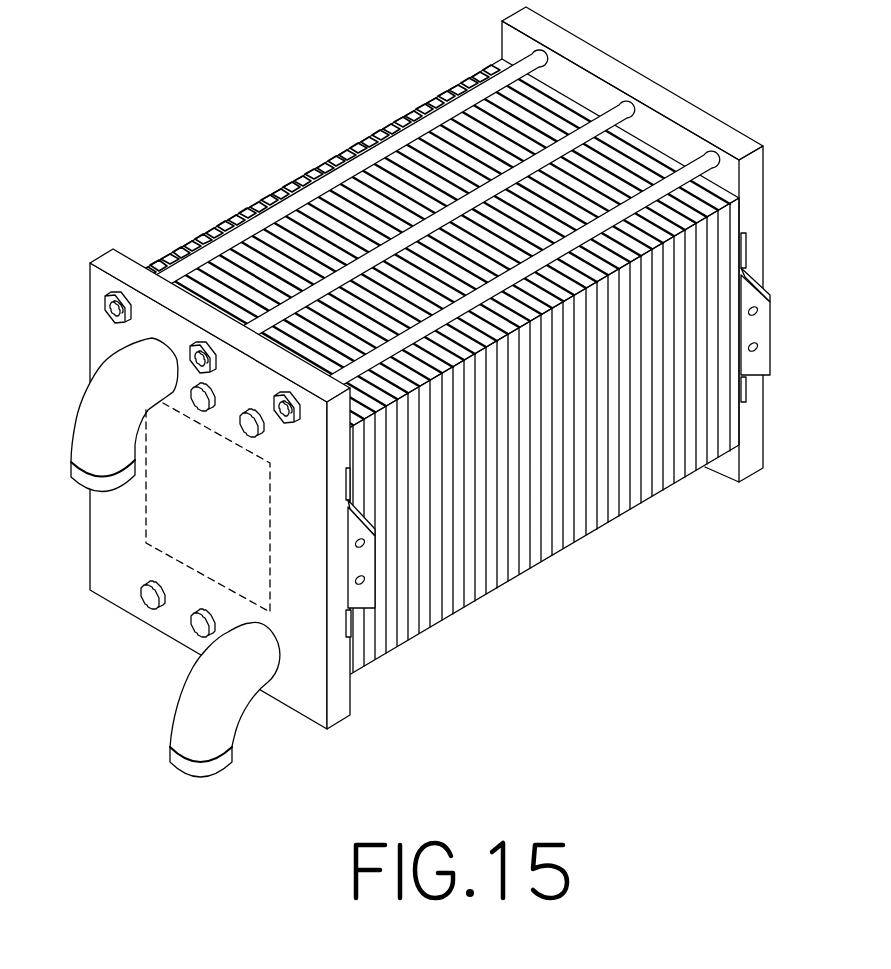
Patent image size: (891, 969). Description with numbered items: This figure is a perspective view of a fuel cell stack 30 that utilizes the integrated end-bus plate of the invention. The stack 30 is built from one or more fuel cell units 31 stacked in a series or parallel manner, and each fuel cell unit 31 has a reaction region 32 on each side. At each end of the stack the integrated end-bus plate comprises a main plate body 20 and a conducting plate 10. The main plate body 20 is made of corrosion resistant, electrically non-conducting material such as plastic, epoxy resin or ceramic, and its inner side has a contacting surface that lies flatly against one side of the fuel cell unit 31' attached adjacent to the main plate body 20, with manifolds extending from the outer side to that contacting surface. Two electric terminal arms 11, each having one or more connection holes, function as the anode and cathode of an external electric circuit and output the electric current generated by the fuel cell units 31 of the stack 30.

The conducting plate 10 is at (742, 397).
The electric terminal arm 11 is at (763, 334).
The main plate body 20 is at (755, 451).
The fuel cell stack 30 is at (608, 575).
The fuel cell unit 31 is at (442, 368).
The fuel cell unit attached adjacent to the main plate body 31' is at (597, 444).
The reaction region 32 is at (160, 505).